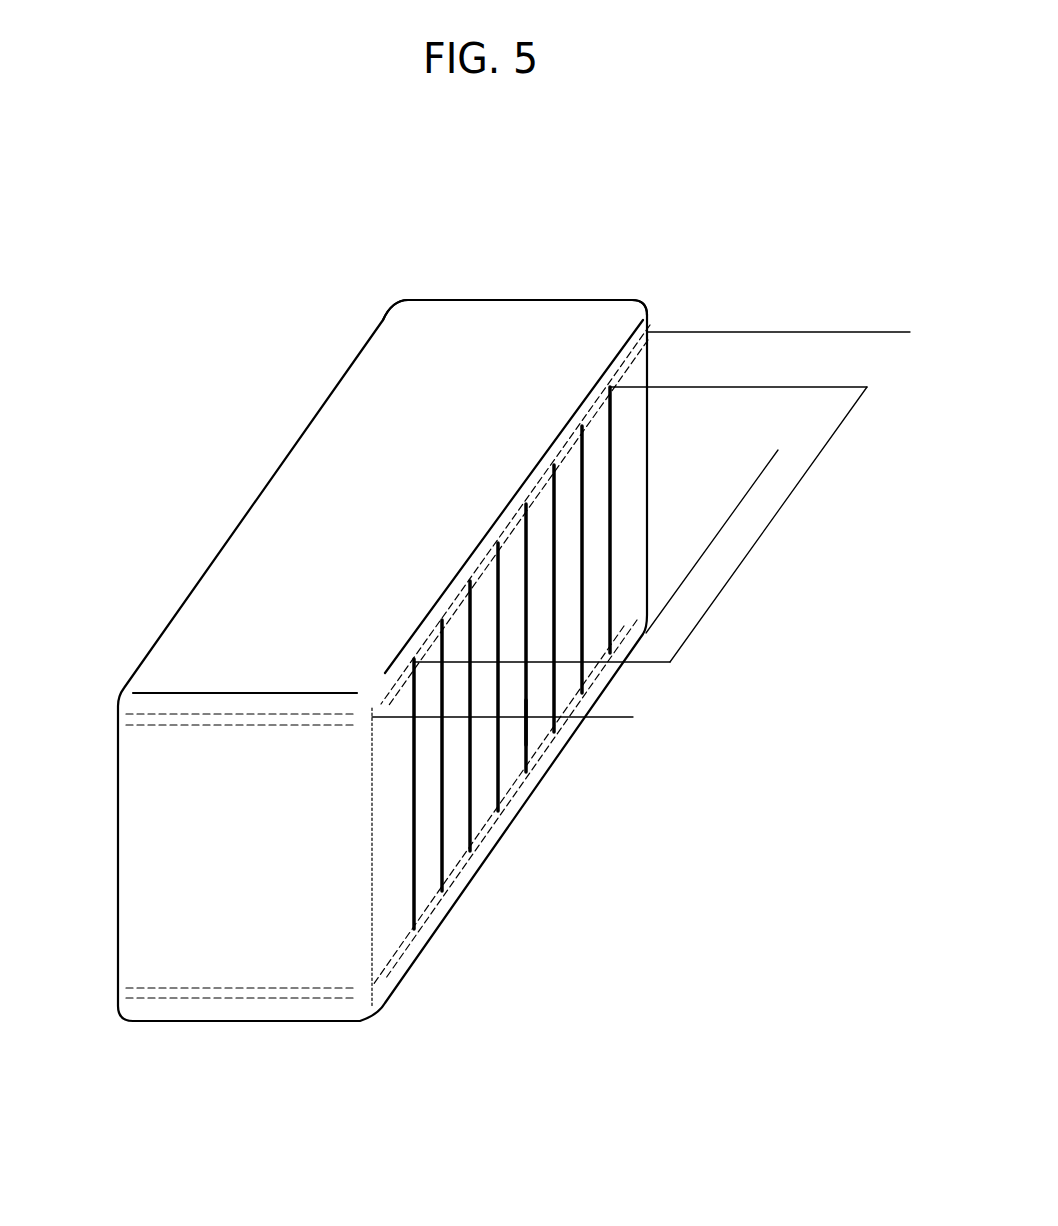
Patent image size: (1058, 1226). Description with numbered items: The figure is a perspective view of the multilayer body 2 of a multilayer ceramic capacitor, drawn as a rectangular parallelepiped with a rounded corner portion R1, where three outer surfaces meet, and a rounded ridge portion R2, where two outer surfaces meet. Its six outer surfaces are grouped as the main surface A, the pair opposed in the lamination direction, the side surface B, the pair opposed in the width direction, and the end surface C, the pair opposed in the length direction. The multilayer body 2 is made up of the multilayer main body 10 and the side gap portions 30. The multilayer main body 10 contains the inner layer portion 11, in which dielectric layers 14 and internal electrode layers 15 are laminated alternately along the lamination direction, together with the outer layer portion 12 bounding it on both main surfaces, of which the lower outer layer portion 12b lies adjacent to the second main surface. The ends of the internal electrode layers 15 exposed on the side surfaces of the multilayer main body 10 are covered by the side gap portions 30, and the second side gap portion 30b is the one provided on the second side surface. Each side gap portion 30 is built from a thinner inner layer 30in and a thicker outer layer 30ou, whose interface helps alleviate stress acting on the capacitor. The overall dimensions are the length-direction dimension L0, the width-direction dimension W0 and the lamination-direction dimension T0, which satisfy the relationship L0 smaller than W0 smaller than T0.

The multilayer body 2 is at (697, 180).
The multilayer main body 10 is at (597, 317).
The side gap portion 30 is at (650, 337).
The second side gap portion 30b is at (467, 880).
The inner layer 30in is at (205, 992).
The outer layer 30ou is at (288, 1008).
The inner layer portion 11 is at (780, 522).
The outer layer portion 12 is at (870, 387).
The lower outer layer portion 12b is at (633, 717).
The dielectric layer 14 is at (508, 772).
The internal electrode layer 15 is at (528, 730).
The corner portion R1 is at (403, 300).
The ridge portion R2 is at (468, 300).
The main surface A is at (503, 300).
The side surface B is at (385, 510).
The end surface C is at (118, 860).
The dimension in the lamination direction T0 is at (400, 300).
The dimension in the length direction L0 is at (408, 280).
The dimension in the width direction W0 is at (778, 118).